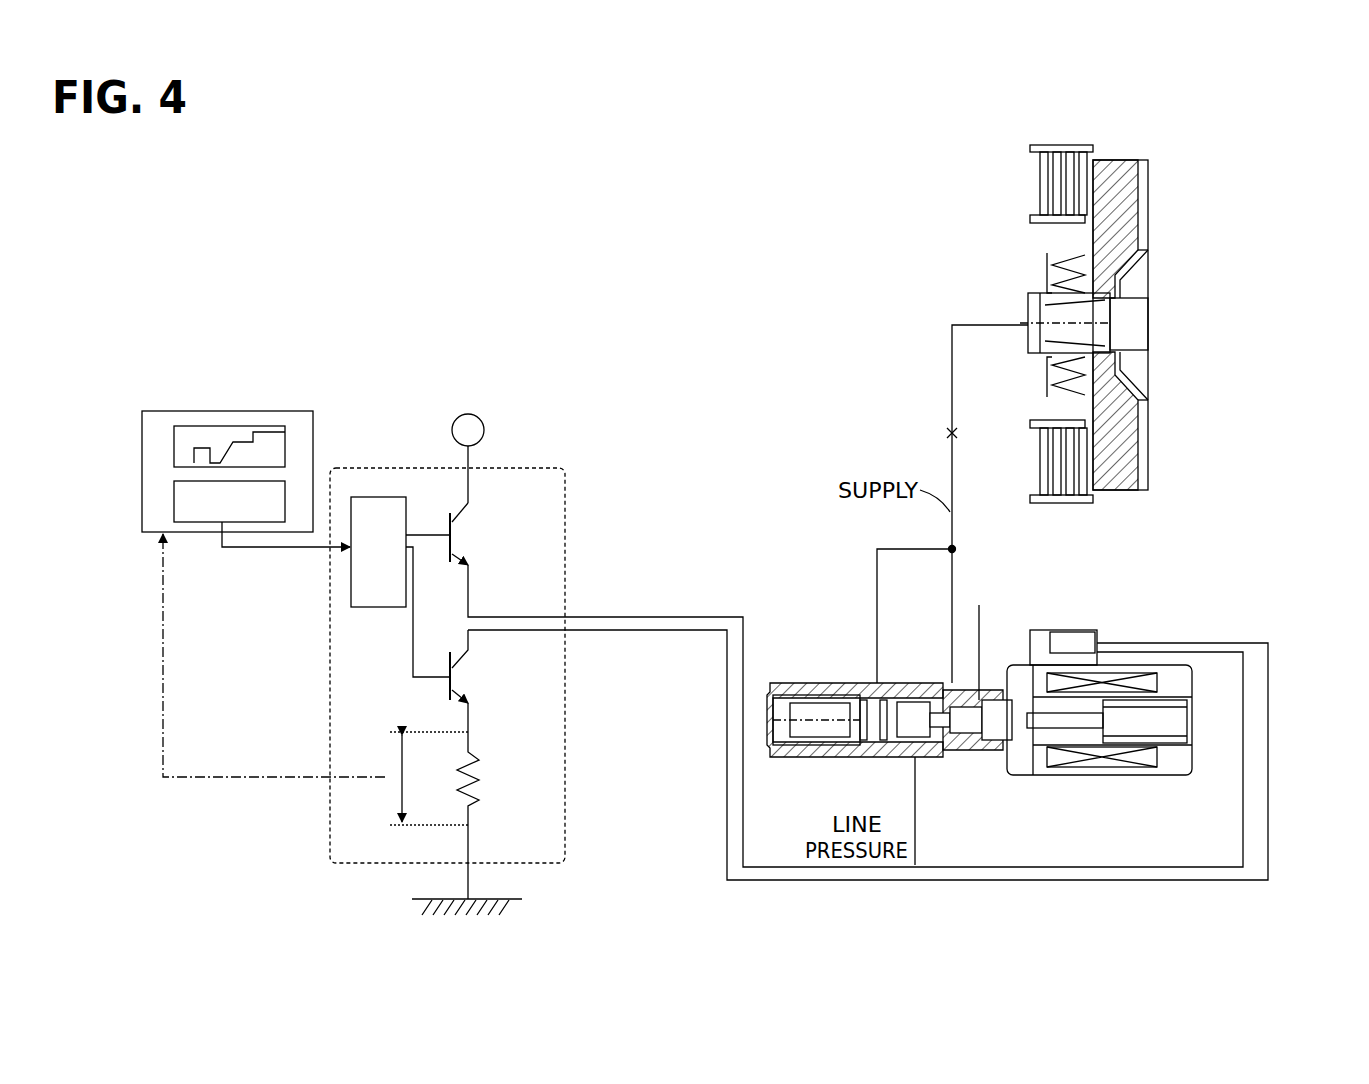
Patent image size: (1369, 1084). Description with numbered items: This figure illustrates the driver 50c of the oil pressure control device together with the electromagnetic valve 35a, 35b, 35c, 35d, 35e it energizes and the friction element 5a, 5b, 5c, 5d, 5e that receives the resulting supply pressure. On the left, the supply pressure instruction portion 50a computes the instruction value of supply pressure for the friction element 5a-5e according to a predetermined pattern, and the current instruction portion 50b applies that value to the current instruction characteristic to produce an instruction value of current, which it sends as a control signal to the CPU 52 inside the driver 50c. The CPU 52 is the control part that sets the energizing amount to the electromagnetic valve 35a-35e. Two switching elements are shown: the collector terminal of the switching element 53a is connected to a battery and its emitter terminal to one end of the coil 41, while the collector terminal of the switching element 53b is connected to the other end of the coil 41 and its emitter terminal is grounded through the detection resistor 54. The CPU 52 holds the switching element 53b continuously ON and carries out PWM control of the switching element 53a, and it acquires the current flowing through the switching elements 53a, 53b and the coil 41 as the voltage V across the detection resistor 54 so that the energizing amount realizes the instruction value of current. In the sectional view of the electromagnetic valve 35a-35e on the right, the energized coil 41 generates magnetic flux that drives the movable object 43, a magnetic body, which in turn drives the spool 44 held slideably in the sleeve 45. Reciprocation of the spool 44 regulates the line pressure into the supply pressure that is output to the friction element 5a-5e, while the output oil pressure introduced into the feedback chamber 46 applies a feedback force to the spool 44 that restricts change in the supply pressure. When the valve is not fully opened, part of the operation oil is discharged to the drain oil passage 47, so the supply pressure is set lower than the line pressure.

The supply pressure instruction portion 50a is at (174, 445).
The current instruction portion 50b is at (174, 500).
The driver 50c is at (518, 468).
The CPU 52 is at (373, 588).
The switching element 53a is at (470, 541).
The switching element 53b is at (465, 677).
The detection resistor 54 is at (468, 805).
The friction element 5a is at (1175, 314).
The friction element 5b is at (1175, 314).
The friction element 5c is at (1175, 314).
The friction element 5d is at (1175, 314).
The friction element 5e is at (1225, 158).
The electromagnetic valve 35a is at (1176, 689).
The electromagnetic valve 35b is at (1176, 689).
The electromagnetic valve 35c is at (1176, 689).
The electromagnetic valve 35d is at (1176, 689).
The electromagnetic valve 35e is at (1176, 689).
The coil 41 is at (1147, 762).
The movable object 43 is at (1182, 728).
The spool 44 is at (994, 740).
The sleeve 45 is at (820, 752).
The feedback chamber 46 is at (893, 690).
The drain oil passage 47 is at (982, 660).